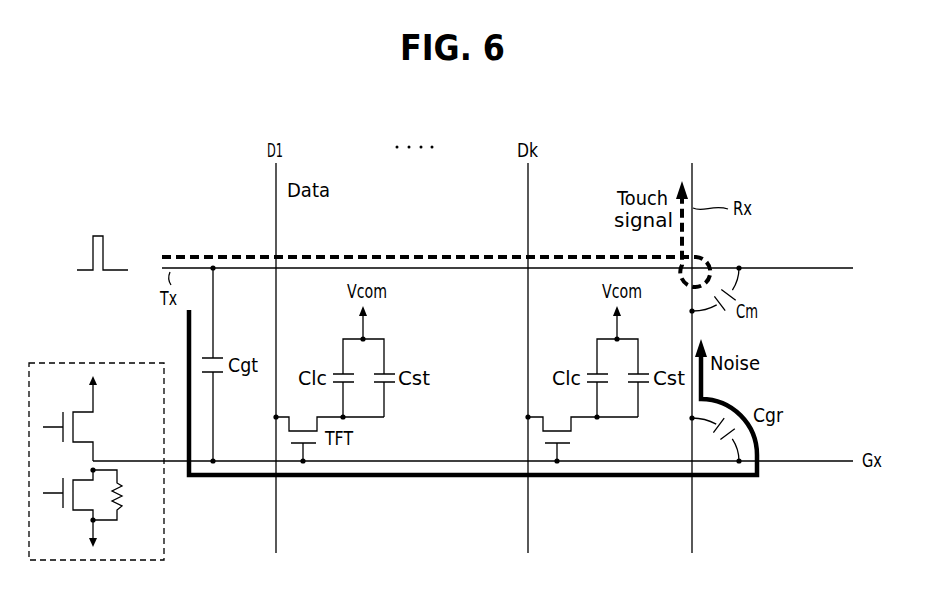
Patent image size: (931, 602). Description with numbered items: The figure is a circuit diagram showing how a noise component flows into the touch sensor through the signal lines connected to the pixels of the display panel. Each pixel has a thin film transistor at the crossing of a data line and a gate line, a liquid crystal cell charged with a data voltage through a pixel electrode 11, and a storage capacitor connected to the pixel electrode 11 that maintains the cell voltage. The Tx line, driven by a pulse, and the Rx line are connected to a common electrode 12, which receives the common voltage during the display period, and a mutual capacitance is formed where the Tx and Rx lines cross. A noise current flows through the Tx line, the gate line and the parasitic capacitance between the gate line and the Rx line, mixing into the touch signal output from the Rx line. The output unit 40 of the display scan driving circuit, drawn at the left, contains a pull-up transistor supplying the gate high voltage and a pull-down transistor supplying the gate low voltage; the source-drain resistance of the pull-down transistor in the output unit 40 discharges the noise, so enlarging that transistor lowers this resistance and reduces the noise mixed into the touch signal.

The output unit 40 is at (107, 360).
The common electrode 12 is at (338, 372).
The pixel electrode 11 is at (338, 387).